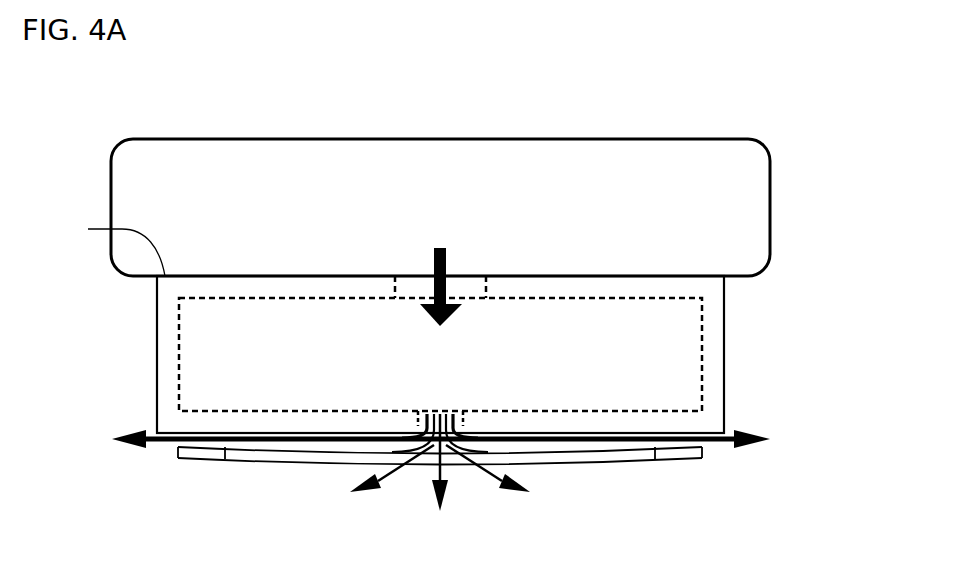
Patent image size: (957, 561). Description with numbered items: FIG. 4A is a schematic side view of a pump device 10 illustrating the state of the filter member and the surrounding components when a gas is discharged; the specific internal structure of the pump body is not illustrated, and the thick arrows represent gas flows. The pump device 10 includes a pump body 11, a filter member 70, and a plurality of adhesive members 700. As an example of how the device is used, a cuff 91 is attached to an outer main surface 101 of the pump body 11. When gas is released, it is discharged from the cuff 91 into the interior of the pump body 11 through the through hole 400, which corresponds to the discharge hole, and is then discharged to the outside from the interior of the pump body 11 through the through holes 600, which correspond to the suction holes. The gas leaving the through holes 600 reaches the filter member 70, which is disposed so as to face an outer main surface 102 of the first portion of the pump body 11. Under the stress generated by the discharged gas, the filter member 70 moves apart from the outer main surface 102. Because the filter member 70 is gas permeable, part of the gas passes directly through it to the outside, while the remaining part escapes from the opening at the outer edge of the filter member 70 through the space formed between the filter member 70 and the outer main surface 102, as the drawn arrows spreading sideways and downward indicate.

The cuff 91 is at (118, 171).
The outer main surface 101 is at (107, 246).
The pump device 10 is at (138, 345).
The pump body 11 is at (713, 348).
The through hole 400 is at (470, 290).
The through holes 600 is at (460, 412).
The outer main surface 102 is at (170, 433).
The filter member 70 is at (270, 453).
The adhesive members 700 is at (207, 458).